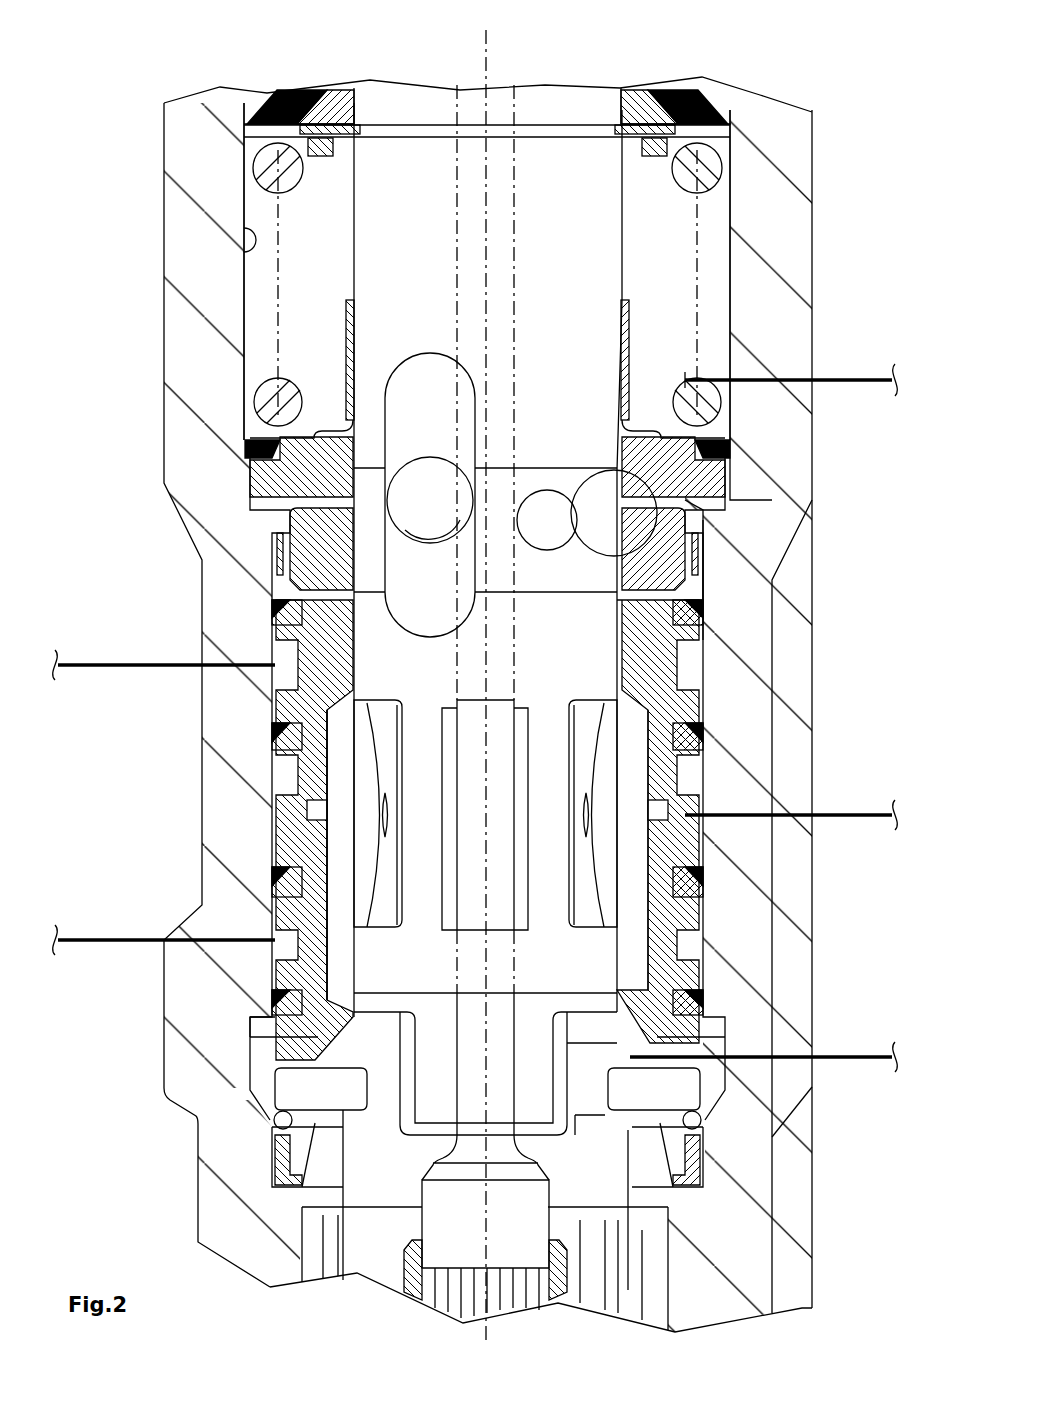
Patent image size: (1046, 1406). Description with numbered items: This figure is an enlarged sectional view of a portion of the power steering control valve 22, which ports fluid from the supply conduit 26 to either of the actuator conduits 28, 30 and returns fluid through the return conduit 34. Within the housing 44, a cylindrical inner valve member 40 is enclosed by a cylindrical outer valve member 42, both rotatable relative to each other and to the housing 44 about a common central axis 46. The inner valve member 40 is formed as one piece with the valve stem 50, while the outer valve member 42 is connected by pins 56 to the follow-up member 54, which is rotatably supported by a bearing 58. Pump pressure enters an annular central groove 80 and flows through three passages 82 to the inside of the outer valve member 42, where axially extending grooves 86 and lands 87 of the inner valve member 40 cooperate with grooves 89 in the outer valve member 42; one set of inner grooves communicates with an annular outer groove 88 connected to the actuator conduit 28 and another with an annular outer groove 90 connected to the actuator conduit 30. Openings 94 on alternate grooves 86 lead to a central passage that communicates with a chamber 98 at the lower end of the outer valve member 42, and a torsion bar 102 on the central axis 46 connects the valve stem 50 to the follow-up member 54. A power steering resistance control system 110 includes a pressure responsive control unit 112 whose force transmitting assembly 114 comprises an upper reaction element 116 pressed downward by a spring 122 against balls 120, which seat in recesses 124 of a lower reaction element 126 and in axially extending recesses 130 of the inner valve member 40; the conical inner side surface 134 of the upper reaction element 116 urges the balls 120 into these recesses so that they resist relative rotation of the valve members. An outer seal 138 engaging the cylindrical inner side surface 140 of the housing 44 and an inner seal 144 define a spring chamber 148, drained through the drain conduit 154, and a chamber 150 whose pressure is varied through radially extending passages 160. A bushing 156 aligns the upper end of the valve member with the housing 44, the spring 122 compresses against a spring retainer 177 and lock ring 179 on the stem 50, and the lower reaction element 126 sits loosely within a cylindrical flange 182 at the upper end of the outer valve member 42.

The power steering control valve 22 is at (845, 103).
The supply conduit 26 is at (880, 818).
The actuator conduit 28 is at (128, 664).
The actuator conduit 30 is at (102, 938).
The return conduit 34 is at (840, 1062).
The inner valve member 40 is at (350, 240).
The outer valve member 42 is at (270, 718).
The housing 44 is at (778, 197).
The central axis 46 is at (486, 68).
The valve stem 50 is at (570, 108).
The follow-up member 54 is at (378, 1245).
The pins 56 is at (280, 1085).
The bearing 58 is at (310, 1258).
The annular central groove 80 is at (285, 778).
The passages 82 is at (318, 805).
The axially extending grooves 86 is at (370, 700).
The lands 87 is at (398, 920).
The annular outer groove 88 is at (685, 655).
The axially extending grooves 89 is at (340, 840).
The annular outer groove 90 is at (695, 955).
The openings 94 is at (578, 805).
The chamber 98 is at (333, 1050).
The torsion bar 102 is at (505, 1242).
The power steering resistance control system 110 is at (817, 265).
The pressure responsive control unit 112 is at (748, 470).
The force transmitting assembly 114 is at (713, 510).
The upper reaction element 116 is at (248, 478).
The balls 120 is at (430, 488).
The spring 122 is at (262, 176).
The recesses 124 is at (700, 578).
The lower reaction element 126 is at (300, 600).
The recesses 130 is at (430, 365).
The annular inner side surface 134 is at (300, 515).
The outer seal 138 is at (255, 445).
The cylindrical inner side surface 140 is at (243, 240).
The inner seal 144 is at (345, 360).
The spring chamber 148 is at (338, 205).
The chamber 150 is at (710, 520).
The drain conduit 154 is at (828, 385).
The bushing 156 is at (275, 105).
The radially extending passages 160 is at (547, 512).
The spring retainer 177 is at (255, 130).
The lock ring 179 is at (825, 137).
The cylindrical flange 182 is at (285, 560).